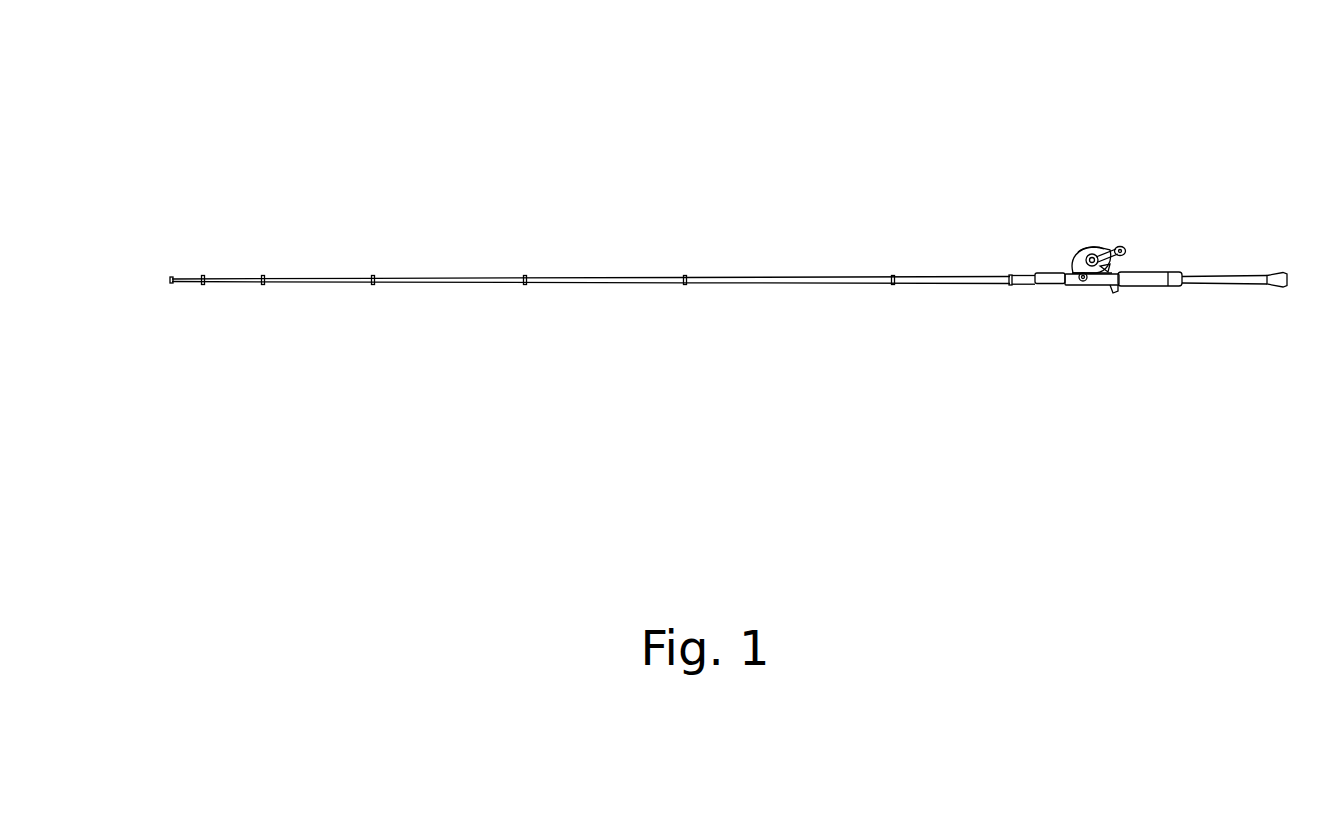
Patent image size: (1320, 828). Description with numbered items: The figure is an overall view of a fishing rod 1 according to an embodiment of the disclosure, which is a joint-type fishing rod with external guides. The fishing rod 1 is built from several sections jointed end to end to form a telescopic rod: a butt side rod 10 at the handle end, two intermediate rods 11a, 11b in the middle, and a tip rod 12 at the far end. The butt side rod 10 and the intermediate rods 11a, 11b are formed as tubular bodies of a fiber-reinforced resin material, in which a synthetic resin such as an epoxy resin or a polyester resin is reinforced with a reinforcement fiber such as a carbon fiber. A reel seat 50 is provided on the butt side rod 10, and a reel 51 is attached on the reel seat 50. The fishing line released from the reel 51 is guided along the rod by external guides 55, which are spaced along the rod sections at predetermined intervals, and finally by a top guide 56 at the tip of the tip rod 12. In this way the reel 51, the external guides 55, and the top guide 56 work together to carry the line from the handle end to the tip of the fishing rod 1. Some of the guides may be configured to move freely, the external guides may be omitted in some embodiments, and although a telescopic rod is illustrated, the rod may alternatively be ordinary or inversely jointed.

The fishing rod 1 is at (778, 134).
The butt side rod 10 is at (729, 331).
The intermediate rod 11a is at (775, 285).
The intermediate rod 11b is at (487, 285).
The tip rod 12 is at (240, 285).
The reel seat 50 is at (1075, 287).
The reel 51 is at (1080, 250).
The external guides 55 is at (263, 275).
The top guide 56 is at (172, 279).